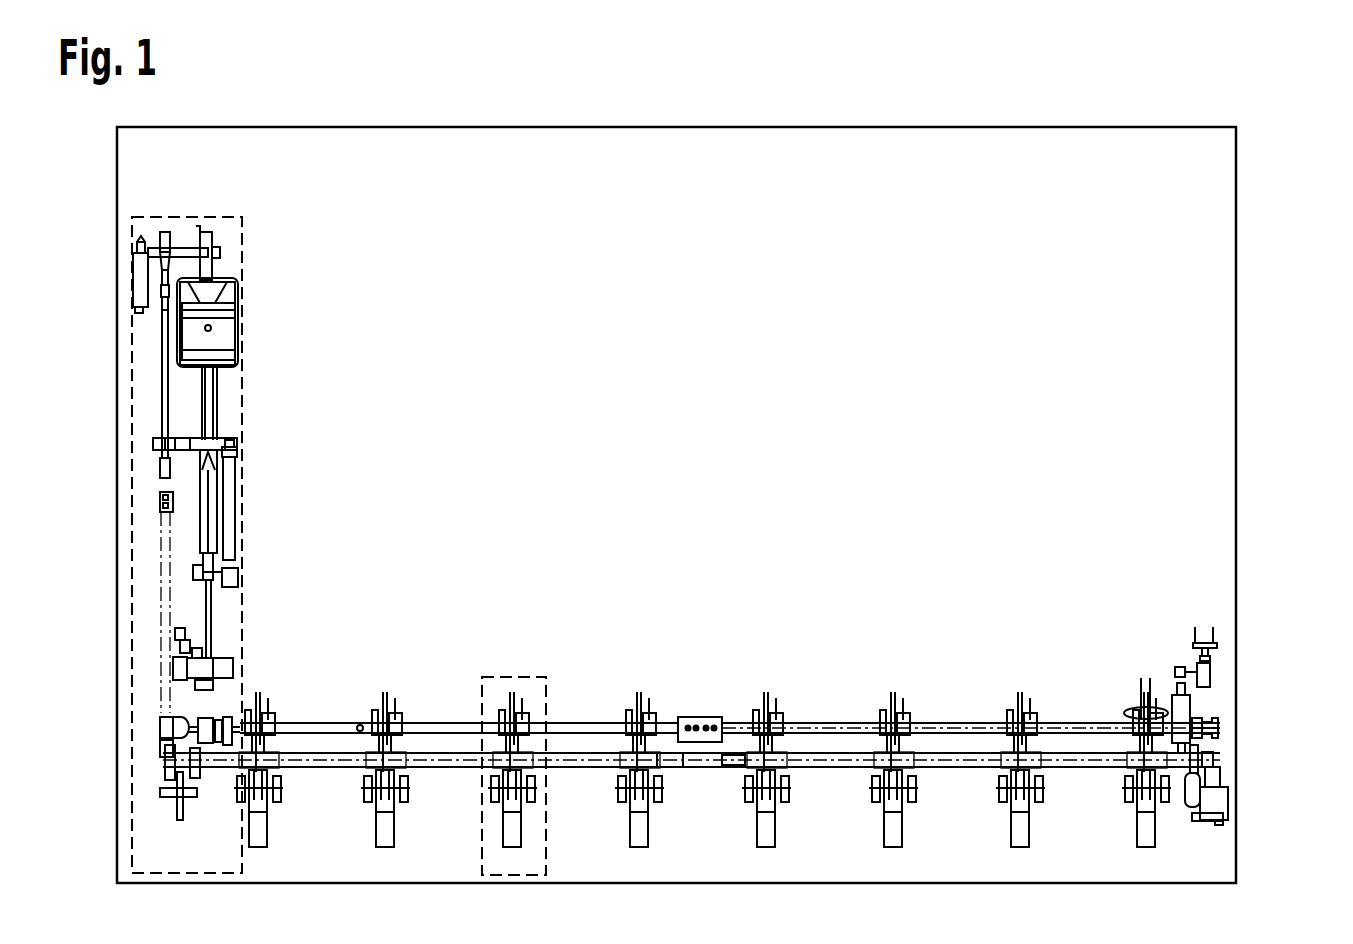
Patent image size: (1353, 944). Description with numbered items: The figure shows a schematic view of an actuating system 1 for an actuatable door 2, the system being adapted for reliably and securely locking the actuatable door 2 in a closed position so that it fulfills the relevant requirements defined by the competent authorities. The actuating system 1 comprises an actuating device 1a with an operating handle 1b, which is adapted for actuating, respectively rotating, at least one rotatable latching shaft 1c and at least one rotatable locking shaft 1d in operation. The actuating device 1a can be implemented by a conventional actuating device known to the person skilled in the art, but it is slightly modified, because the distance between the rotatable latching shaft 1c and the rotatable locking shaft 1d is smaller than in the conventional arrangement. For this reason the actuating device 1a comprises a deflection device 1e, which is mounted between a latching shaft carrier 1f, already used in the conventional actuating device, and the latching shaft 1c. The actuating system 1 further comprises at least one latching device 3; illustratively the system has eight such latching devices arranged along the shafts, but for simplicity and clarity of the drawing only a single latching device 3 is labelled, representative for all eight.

The actuating system 1 is at (522, 545).
The actuating device 1a is at (234, 545).
The operating handle 1b is at (227, 367).
The rotatable latching shaft 1c is at (333, 722).
The rotatable locking shaft 1d is at (330, 771).
The deflection device 1e is at (217, 703).
The latching shaft carrier 1f is at (227, 657).
The actuatable door 2 is at (1237, 290).
The latching device 3 is at (547, 697).